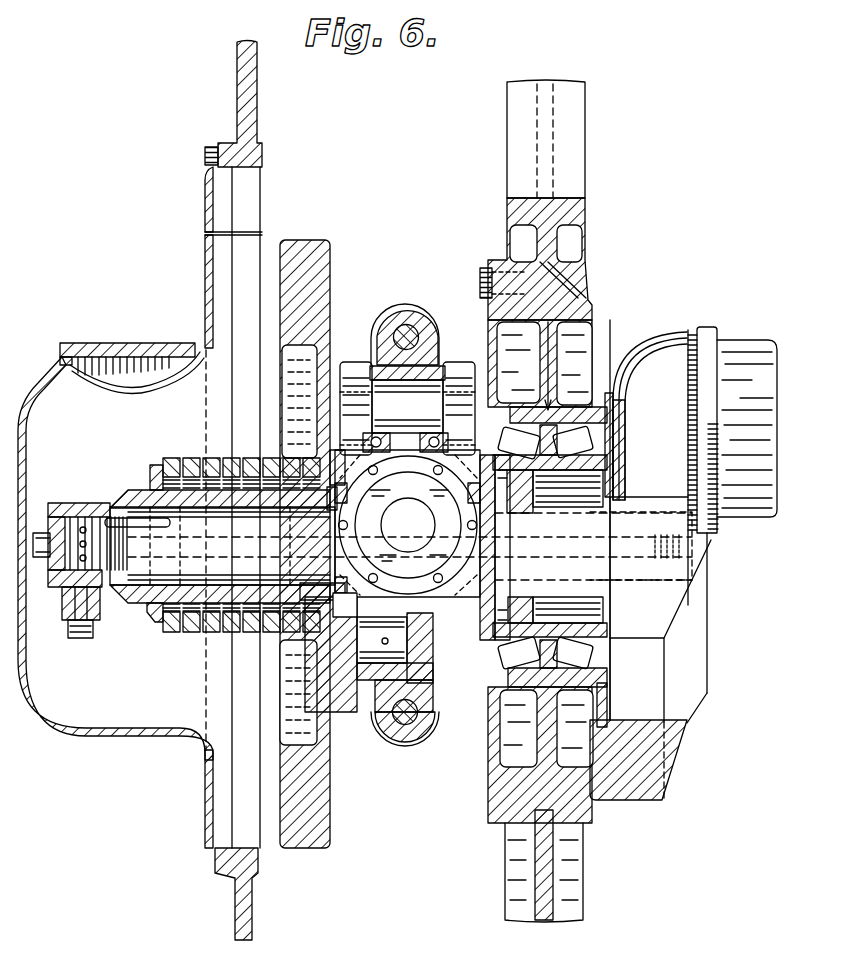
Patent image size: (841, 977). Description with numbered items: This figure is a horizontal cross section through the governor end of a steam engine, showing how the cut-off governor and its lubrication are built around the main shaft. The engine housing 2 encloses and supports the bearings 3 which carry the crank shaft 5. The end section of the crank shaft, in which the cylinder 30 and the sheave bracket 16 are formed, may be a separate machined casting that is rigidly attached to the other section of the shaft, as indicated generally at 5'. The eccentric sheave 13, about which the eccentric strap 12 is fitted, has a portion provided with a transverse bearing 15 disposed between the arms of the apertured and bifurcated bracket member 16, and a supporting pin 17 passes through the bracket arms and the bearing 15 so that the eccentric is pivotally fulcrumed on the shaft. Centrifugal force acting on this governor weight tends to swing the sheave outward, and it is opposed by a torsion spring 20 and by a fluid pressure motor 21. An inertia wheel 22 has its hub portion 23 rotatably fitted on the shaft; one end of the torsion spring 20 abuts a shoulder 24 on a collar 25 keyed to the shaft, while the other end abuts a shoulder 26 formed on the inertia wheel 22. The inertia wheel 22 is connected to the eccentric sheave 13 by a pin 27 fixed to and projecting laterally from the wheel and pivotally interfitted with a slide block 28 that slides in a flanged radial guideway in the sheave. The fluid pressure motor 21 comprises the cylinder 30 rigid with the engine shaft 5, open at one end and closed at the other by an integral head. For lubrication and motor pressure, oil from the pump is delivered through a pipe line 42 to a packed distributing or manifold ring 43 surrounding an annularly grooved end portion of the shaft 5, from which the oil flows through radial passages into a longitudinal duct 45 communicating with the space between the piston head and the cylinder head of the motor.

The housing 2 is at (203, 186).
The bearings 3 is at (600, 425).
The crank shaft 5 is at (695, 514).
The attachment of crank shaft end section 5' is at (666, 648).
The eccentric strap 12 is at (390, 328).
The eccentric sheave 13 is at (428, 665).
The transverse bearing 15 is at (418, 372).
The bracket member 16 is at (354, 364).
The supporting pin 17 is at (435, 404).
The torsion spring 20 is at (193, 460).
The fluid pressure motor 21 is at (528, 567).
The inertia wheel 22 is at (326, 236).
The hub portion 23 is at (268, 500).
The shoulder 24 is at (162, 623).
The collar 25 is at (150, 472).
The shoulder 26 is at (308, 452).
The pin 27 is at (400, 636).
The slide block 28 is at (415, 664).
The cylinder 30 is at (388, 574).
The pipe line 42 is at (80, 637).
The manifold ring 43 is at (73, 508).
The longitudinal duct 45 is at (150, 620).